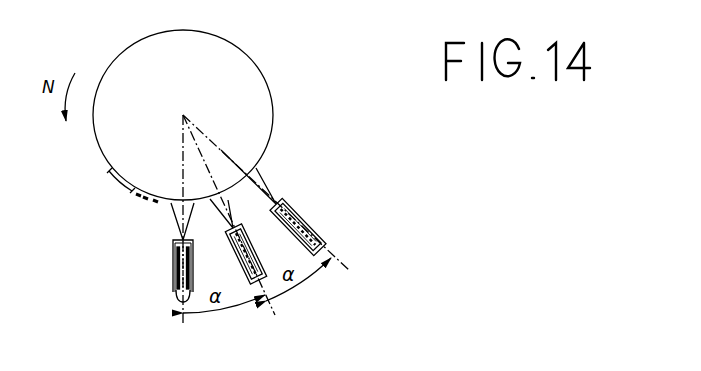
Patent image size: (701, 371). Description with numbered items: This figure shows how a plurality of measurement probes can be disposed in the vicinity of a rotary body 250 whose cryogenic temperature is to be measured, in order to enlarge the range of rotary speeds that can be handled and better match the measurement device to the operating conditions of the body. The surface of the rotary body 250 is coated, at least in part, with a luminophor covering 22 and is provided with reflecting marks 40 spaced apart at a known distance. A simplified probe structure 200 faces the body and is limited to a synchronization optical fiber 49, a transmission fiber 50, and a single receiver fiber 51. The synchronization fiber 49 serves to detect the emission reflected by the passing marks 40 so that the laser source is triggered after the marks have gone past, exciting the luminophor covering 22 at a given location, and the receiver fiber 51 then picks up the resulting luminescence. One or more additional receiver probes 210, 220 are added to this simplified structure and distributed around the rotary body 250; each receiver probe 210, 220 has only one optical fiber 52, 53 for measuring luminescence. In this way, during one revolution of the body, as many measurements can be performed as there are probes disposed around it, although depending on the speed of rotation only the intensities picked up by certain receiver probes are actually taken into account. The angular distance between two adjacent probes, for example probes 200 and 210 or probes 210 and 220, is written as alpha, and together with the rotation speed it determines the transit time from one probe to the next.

The rotary body 250 is at (123, 55).
The luminophor covering 22 is at (117, 185).
The reflecting marks 40 is at (147, 200).
The simplified probe structure 200 is at (157, 252).
The receiver probe 210 is at (256, 256).
The receiver probe 220 is at (300, 223).
The synchronization optical fiber 49 is at (180, 299).
The transmission fiber 50 is at (183, 305).
The receiver fiber 51 is at (195, 295).
The optical fiber 52 is at (288, 285).
The optical fiber 53 is at (324, 246).